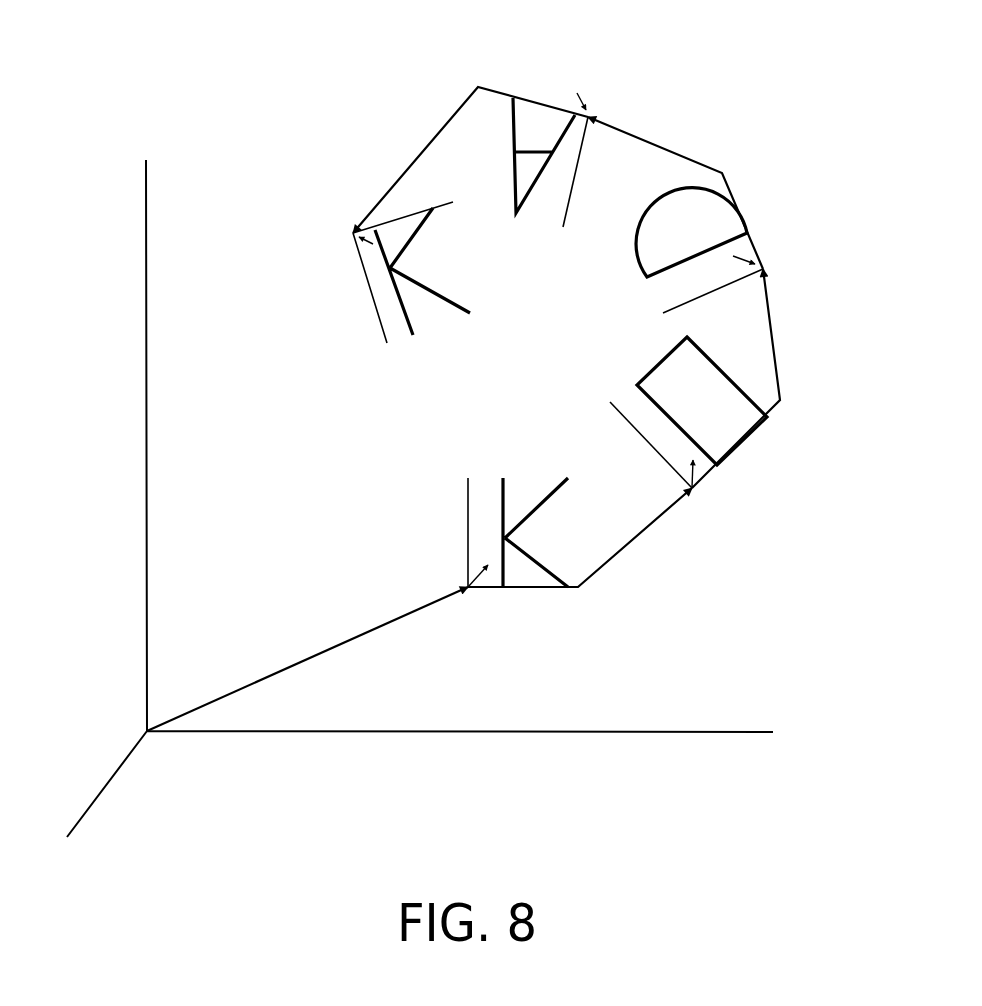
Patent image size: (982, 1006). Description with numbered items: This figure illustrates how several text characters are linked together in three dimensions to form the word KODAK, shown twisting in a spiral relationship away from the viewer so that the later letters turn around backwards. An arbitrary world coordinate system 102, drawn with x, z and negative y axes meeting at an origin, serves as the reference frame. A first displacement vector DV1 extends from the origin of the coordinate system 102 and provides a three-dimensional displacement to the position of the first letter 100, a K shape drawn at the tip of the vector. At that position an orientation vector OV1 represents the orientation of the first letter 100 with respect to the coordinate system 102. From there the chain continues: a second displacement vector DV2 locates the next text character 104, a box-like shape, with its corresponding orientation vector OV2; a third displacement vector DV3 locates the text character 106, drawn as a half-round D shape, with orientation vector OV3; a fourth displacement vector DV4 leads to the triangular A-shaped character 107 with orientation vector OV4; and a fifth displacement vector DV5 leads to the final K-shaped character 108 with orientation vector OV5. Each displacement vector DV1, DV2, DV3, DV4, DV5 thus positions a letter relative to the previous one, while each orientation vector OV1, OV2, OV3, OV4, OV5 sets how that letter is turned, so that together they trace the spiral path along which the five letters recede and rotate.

The first letter 100 is at (529, 472).
The world coordinate system 102 is at (143, 730).
The text character 104 is at (663, 348).
The text character 106 is at (629, 272).
The triangular element at OV4 107 is at (563, 84).
The K-shaped element at OV5 108 is at (352, 309).
The orientation vector OV1 is at (483, 589).
The orientation vector OV2 is at (703, 489).
The orientation vector OV3 is at (765, 268).
The orientation vector OV4 is at (590, 116).
The orientation vector OV5 is at (350, 242).
The displacement vector DV1 is at (333, 650).
The second displacement vector DV2 is at (650, 530).
The third displacement vector DV3 is at (778, 347).
The fourth displacement vector DV4 is at (665, 148).
The fifth displacement vector DV5 is at (405, 171).